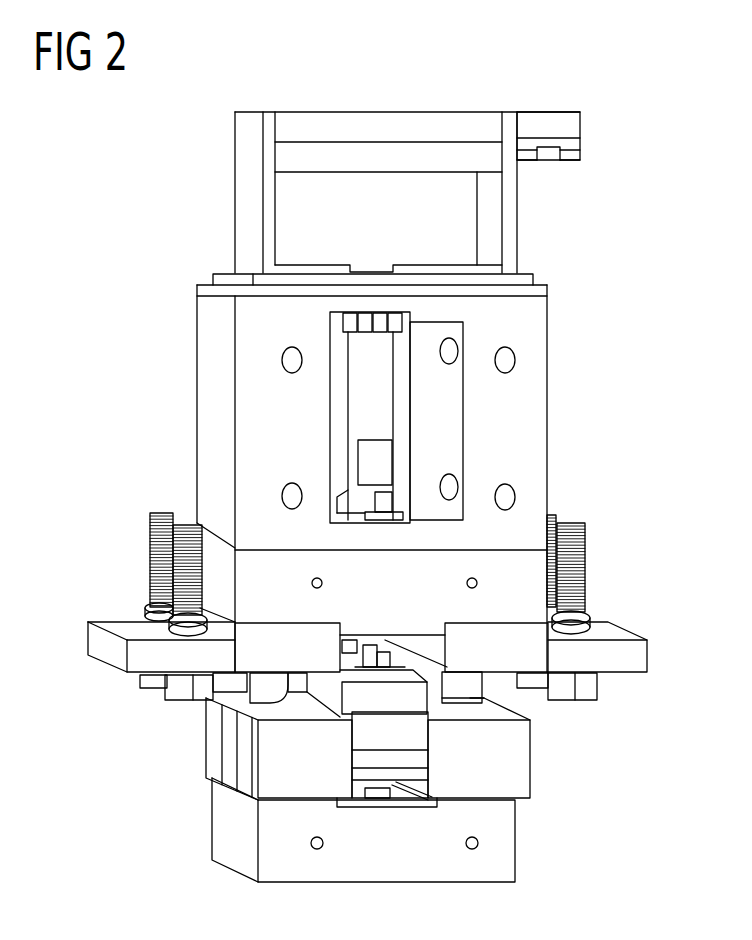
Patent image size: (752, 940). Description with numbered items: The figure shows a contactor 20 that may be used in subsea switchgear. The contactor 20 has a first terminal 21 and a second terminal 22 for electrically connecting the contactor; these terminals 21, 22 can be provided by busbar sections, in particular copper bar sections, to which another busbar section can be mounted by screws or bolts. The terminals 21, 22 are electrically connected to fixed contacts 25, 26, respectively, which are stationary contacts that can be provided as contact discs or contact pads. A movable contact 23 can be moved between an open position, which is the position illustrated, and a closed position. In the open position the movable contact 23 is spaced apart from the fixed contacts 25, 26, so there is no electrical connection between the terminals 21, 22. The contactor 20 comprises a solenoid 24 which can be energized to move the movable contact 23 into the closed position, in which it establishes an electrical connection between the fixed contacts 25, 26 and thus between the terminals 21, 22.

The contactor 20 is at (118, 348).
The first terminal 21 is at (103, 642).
The second terminal 22 is at (633, 653).
The movable contact 23 is at (230, 758).
The solenoid 24 is at (457, 227).
The fixed contact 25 is at (250, 690).
The fixed contact 26 is at (485, 695).